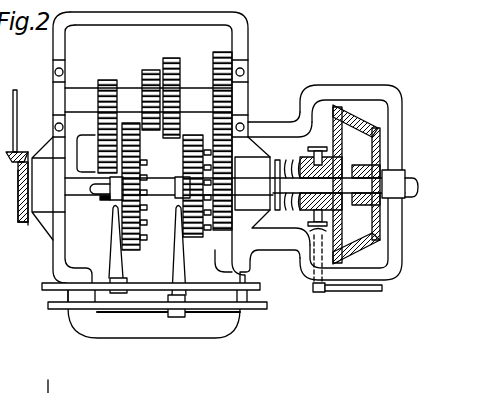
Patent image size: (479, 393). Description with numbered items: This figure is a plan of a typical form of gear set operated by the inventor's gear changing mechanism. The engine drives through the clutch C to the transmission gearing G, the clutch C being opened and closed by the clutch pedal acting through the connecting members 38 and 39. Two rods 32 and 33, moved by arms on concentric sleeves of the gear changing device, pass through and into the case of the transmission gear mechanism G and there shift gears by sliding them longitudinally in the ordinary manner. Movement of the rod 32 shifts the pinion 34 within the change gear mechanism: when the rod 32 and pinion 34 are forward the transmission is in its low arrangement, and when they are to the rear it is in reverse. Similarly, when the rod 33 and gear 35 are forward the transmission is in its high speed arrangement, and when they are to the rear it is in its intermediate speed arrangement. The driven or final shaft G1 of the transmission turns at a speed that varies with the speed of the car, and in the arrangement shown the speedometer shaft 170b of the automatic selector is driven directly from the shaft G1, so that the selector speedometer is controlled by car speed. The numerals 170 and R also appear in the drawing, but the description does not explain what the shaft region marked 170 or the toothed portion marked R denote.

The speedometer shaft 170b is at (17, 100).
The bevel gear 170 is at (18, 186).
The gear teeth R is at (19, 222).
The driven or final shaft G1 is at (22, 230).
The pinion 34 is at (122, 208).
The gear 35 is at (195, 228).
The transmission gearing G is at (146, 320).
The rod 32 is at (229, 290).
The rod 33 is at (250, 310).
The connecting member 39 is at (343, 292).
The clutch C is at (367, 265).
The connecting member 38 is at (382, 287).